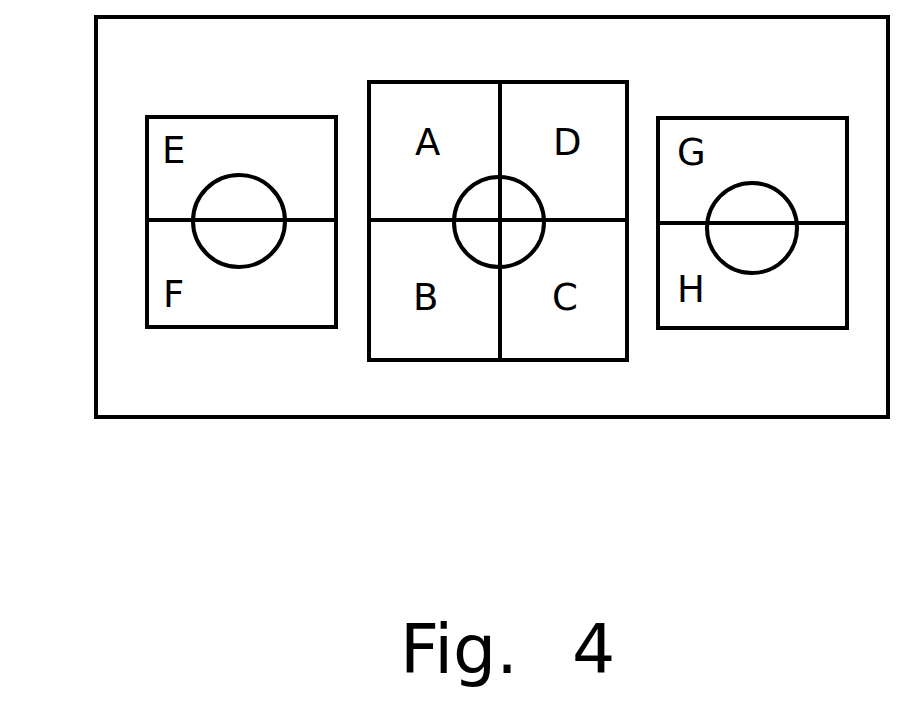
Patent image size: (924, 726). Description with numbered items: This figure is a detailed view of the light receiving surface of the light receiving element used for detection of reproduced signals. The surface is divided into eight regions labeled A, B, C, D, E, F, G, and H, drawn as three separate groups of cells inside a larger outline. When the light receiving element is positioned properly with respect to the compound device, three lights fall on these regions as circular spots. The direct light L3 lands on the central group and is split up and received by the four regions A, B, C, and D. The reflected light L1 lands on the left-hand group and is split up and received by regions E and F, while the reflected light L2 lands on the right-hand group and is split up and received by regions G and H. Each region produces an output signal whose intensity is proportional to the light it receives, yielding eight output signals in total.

The reflected light L1 is at (201, 195).
The reflected light L2 is at (772, 268).
The direct light L3 is at (472, 258).